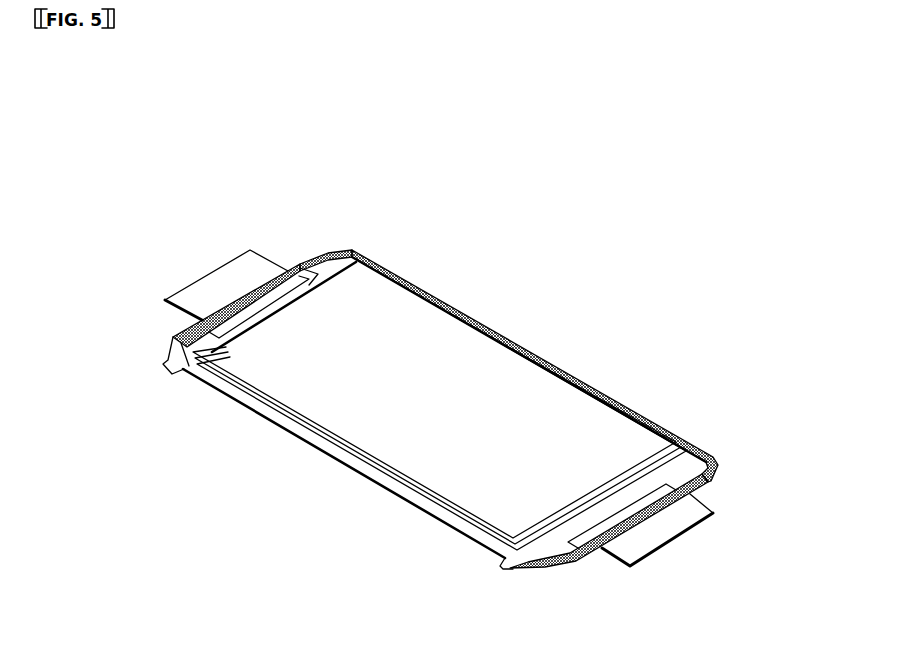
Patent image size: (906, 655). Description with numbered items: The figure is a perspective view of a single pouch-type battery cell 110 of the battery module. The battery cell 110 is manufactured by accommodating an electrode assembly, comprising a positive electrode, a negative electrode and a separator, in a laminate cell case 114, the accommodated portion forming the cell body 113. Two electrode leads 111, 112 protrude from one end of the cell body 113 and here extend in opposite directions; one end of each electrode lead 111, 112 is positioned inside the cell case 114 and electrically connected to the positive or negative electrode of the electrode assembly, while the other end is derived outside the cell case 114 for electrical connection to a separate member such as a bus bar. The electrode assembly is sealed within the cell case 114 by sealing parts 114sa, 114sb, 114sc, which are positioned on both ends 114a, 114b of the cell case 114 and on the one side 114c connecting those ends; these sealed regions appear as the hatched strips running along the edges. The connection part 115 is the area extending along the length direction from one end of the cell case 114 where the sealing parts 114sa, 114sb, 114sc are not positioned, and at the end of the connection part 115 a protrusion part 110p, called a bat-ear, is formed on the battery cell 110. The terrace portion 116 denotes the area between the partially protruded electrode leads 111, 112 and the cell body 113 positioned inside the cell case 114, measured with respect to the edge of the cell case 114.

The battery cell 110 is at (379, 110).
The electrode lead 111 is at (218, 278).
The electrode lead 112 is at (673, 538).
The cell body 113 is at (448, 338).
The cell case 114 is at (705, 452).
The end of cell case 114a is at (316, 252).
The end of cell case 114b is at (575, 563).
The side of cell case 114c is at (549, 361).
The sealing part 114sa is at (297, 262).
The sealing part 114sb is at (710, 480).
The sealing part 114sc is at (636, 411).
The connection part 115 is at (368, 470).
The terrace portion 116 is at (192, 348).
The protrusion part 110p is at (168, 362).